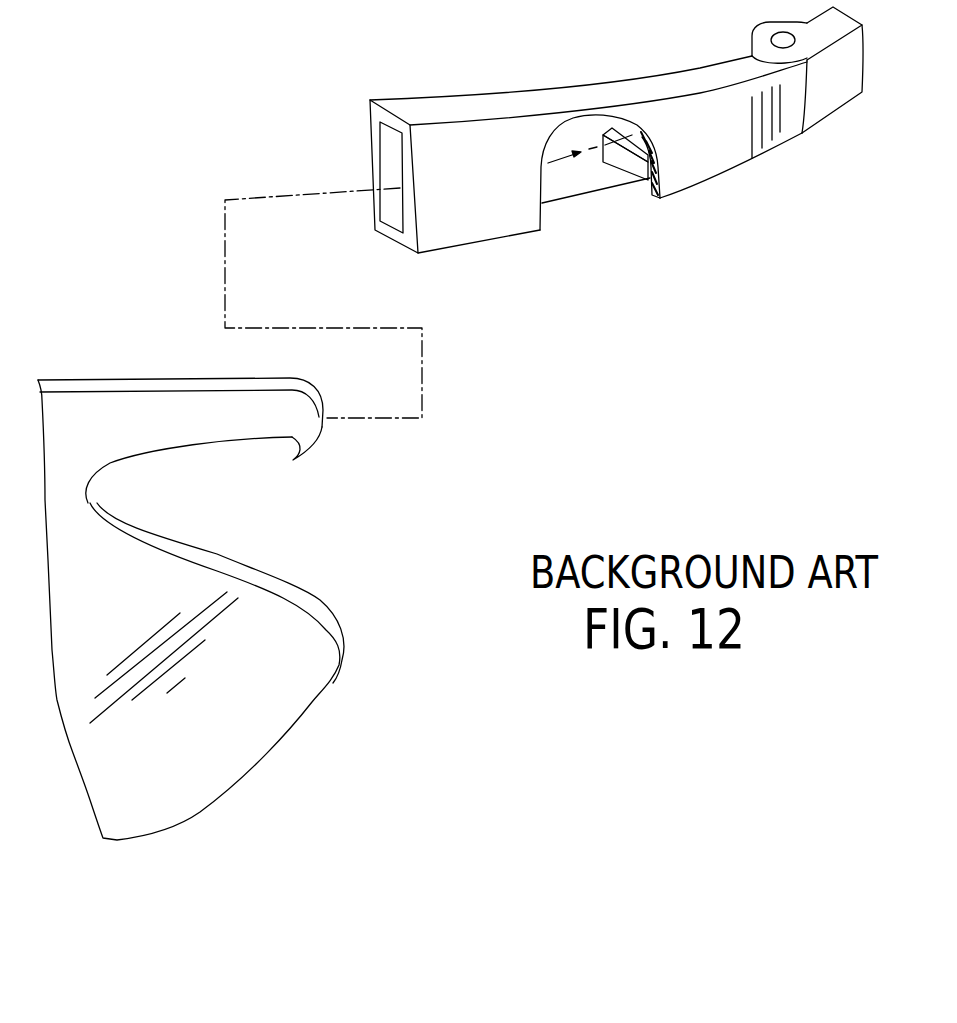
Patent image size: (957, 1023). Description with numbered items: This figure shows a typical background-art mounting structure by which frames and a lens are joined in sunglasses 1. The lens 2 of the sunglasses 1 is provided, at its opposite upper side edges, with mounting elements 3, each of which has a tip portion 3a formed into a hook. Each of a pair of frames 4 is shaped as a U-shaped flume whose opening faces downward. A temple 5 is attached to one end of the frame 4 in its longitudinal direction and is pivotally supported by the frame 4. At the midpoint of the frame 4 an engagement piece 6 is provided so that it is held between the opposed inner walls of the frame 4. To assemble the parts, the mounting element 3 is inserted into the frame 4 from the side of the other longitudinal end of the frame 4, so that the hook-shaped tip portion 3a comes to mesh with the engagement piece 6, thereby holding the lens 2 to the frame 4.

The sunglasses 1 is at (118, 145).
The lens 2 is at (263, 705).
The mounting element 3 is at (148, 403).
The tip portion 3a is at (305, 430).
The frame 4 is at (473, 100).
The temple 5 is at (837, 87).
The engagement piece 6 is at (632, 170).